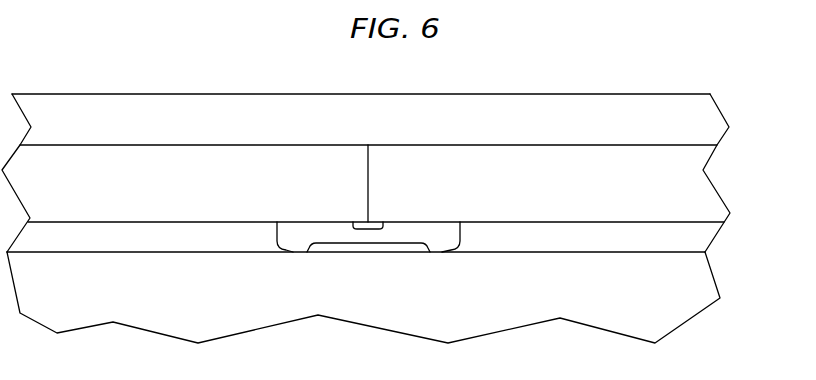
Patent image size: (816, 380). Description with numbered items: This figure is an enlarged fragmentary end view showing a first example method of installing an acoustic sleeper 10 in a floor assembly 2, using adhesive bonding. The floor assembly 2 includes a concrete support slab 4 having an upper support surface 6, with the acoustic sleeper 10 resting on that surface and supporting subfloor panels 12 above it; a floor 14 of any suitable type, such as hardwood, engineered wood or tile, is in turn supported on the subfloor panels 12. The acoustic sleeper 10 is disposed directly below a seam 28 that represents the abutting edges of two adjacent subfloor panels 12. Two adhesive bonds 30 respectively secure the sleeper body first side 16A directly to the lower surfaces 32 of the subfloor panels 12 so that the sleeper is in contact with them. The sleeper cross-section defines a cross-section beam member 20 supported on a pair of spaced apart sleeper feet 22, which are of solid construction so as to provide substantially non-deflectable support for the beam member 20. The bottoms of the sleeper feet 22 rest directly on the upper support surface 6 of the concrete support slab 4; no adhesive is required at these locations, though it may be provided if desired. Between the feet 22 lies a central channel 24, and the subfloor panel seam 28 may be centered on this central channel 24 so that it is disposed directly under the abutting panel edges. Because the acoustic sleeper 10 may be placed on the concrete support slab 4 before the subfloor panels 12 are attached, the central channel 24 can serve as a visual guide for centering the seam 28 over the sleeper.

The floor assembly 2 is at (748, 188).
The concrete support slab 4 is at (617, 313).
The upper support surface 6 is at (688, 252).
The acoustic sleeper 10 is at (240, 249).
The subfloor panels 12 is at (120, 145).
The floor 14 is at (596, 94).
The sleeper body first side 16A is at (440, 221).
The cross-section beam member 20 is at (455, 233).
The sleeper feet 22 is at (296, 250).
The central channel 24 is at (361, 228).
The seam 28 is at (367, 177).
The adhesive bonds 30 is at (310, 221).
The lower surfaces 32 is at (120, 222).